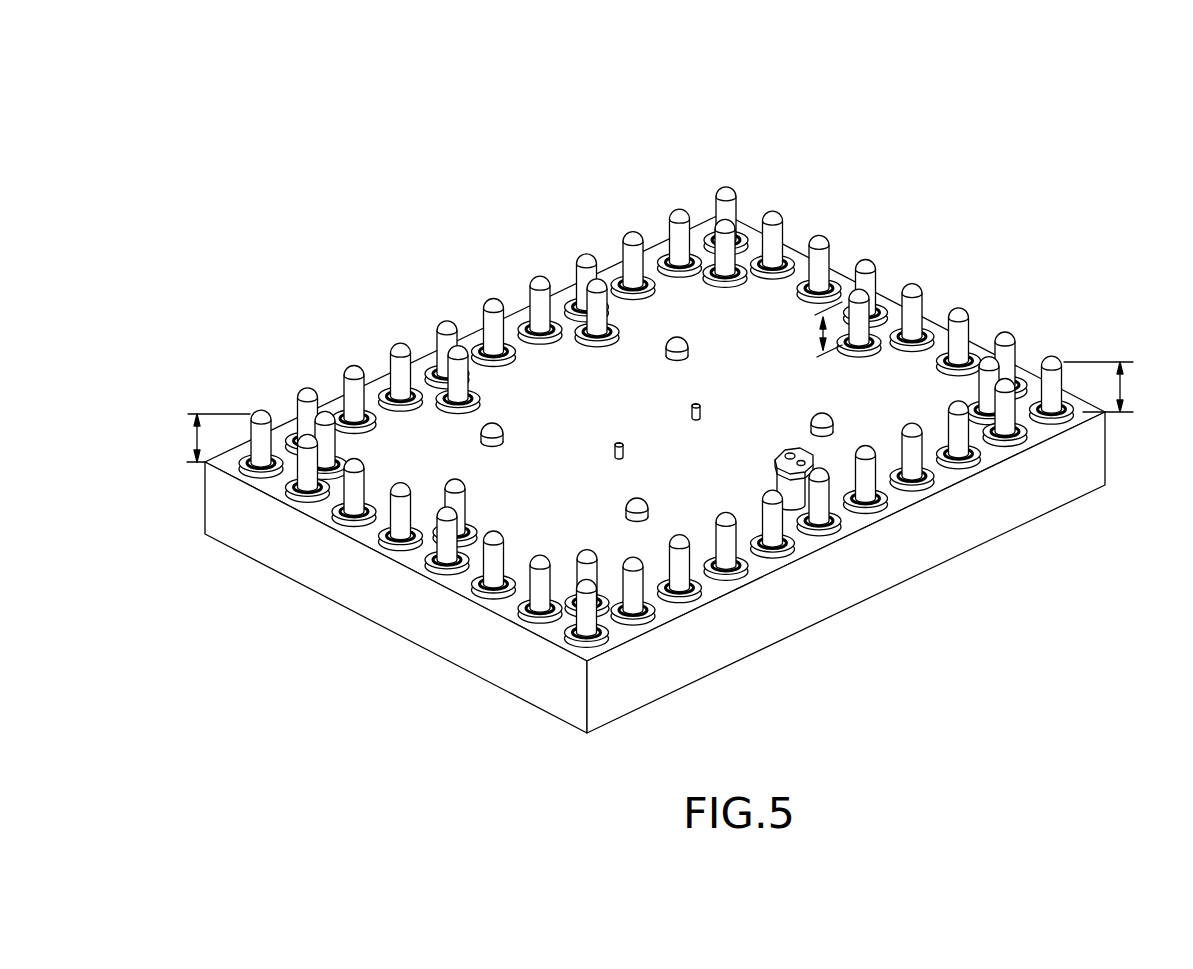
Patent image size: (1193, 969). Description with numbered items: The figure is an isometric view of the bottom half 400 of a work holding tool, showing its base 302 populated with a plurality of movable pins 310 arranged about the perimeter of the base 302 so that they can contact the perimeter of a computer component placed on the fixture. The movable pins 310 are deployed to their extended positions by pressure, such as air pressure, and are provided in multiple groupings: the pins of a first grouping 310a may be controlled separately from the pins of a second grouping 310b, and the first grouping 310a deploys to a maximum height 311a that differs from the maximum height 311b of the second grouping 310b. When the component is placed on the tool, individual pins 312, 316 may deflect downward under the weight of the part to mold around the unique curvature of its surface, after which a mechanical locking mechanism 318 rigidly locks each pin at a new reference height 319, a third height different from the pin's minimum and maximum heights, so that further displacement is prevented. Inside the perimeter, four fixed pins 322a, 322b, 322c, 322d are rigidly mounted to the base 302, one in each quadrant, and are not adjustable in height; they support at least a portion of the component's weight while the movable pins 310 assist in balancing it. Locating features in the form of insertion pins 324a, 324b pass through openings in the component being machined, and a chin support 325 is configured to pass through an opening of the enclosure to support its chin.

The bottom half 400 is at (651, 434).
The base 302 is at (1100, 468).
The movable pins 310 is at (823, 247).
The first grouping of pins 310a is at (440, 328).
The second grouping of pins 310b is at (327, 440).
The maximum height 311a is at (195, 437).
The maximum height 311b is at (819, 334).
The pin 312 is at (590, 617).
The pin 316 is at (866, 326).
The mechanical locking mechanism 318 is at (1052, 370).
The new reference height 319 is at (1122, 392).
The fixed pin 322a is at (830, 417).
The fixed pin 322b is at (688, 352).
The fixed pin 322c is at (500, 430).
The fixed pin 322d is at (630, 514).
The insertion pin 324a is at (701, 410).
The insertion pin 324b is at (624, 452).
The chin support 325 is at (777, 457).